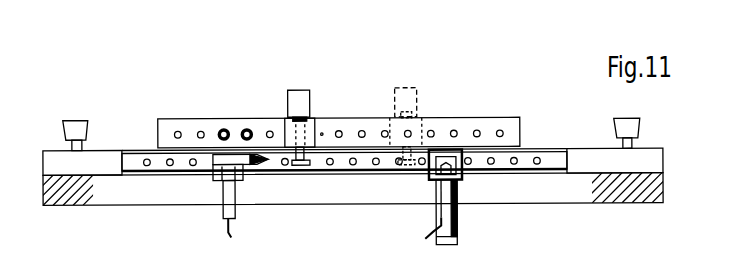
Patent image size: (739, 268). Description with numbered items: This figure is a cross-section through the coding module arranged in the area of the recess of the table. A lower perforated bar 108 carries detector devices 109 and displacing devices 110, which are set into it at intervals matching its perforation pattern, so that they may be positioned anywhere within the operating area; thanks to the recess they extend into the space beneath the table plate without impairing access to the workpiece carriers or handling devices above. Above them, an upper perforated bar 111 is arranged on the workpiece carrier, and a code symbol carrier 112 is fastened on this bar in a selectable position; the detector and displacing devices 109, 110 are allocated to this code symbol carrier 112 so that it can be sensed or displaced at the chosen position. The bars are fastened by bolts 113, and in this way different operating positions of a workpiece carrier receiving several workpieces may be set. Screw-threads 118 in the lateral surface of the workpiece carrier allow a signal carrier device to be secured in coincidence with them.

The perforated bar 108 is at (553, 159).
The detector device 109 is at (240, 192).
The displacing device 110 is at (465, 215).
The perforated bar 111 is at (363, 128).
The code symbol carrier 112 is at (321, 133).
The workpiece 113 is at (297, 98).
The screw-threads 118 is at (216, 129).